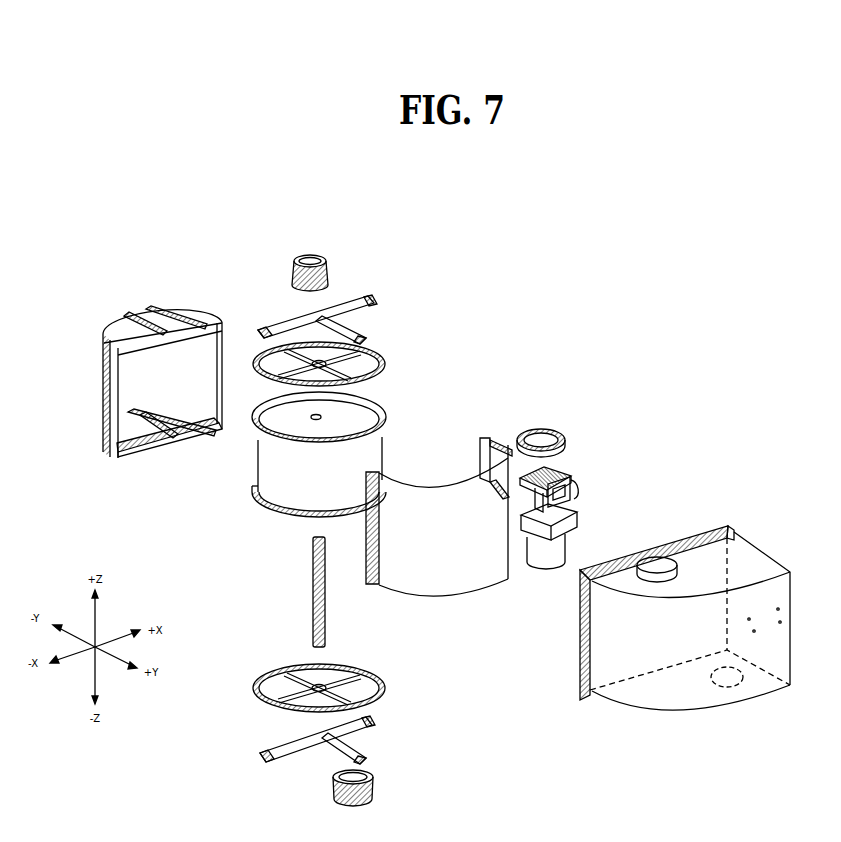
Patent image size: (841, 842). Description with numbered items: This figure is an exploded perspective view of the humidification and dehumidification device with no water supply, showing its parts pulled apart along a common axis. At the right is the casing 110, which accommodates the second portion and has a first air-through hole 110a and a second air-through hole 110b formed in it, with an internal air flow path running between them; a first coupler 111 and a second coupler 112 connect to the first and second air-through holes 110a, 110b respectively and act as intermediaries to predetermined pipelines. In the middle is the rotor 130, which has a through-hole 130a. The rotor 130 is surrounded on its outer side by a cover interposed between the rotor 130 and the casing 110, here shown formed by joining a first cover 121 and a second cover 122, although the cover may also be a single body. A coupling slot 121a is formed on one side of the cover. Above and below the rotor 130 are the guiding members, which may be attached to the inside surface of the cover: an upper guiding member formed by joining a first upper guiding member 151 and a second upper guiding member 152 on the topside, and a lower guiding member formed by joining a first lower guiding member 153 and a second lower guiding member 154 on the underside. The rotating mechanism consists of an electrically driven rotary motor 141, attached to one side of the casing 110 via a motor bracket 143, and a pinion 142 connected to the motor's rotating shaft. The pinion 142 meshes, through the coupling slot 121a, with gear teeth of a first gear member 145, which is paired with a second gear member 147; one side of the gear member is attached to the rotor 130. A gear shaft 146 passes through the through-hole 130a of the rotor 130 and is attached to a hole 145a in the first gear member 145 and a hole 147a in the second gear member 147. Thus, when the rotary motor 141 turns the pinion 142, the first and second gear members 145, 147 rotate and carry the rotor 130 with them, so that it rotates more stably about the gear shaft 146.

The casing 110 is at (700, 586).
The first air-through hole 110a is at (660, 548).
The second air-through hole 110b is at (735, 690).
The first coupler 111 is at (324, 257).
The second coupler 112 is at (375, 790).
The first cover 121 is at (478, 511).
The coupling slot 121a is at (506, 449).
The second cover 122 is at (119, 380).
The rotor 130 is at (394, 432).
The through-hole 130a is at (322, 414).
The rotary motor 141 is at (541, 556).
The pinion 142 is at (560, 425).
The motor bracket 143 is at (560, 482).
The first gear member 145 is at (354, 324).
The hole 145a is at (259, 362).
The gear shaft 146 is at (312, 573).
The second gear member 147 is at (298, 660).
The hole 147a is at (333, 683).
The first upper guiding member 151 is at (374, 301).
The second upper guiding member 152 is at (190, 338).
The first lower guiding member 153 is at (372, 737).
The second lower guiding member 154 is at (143, 447).